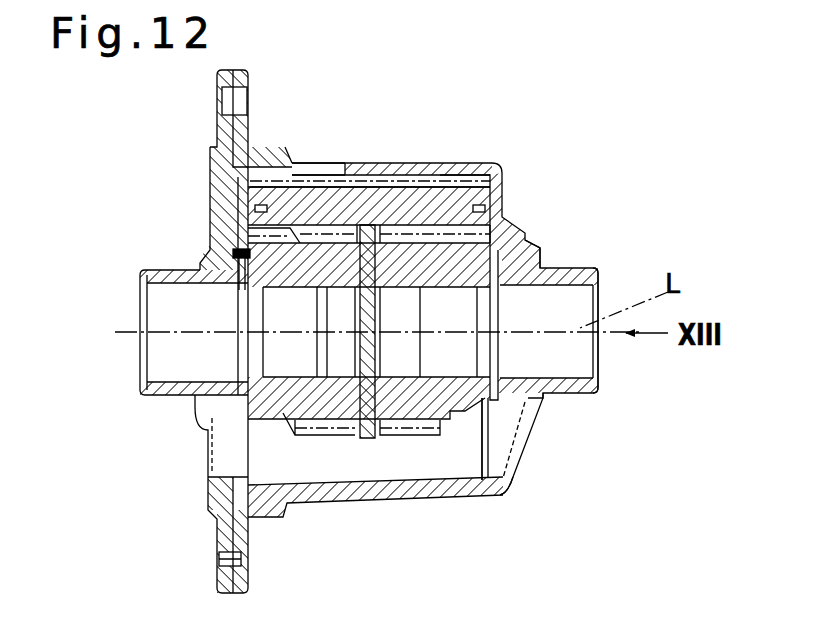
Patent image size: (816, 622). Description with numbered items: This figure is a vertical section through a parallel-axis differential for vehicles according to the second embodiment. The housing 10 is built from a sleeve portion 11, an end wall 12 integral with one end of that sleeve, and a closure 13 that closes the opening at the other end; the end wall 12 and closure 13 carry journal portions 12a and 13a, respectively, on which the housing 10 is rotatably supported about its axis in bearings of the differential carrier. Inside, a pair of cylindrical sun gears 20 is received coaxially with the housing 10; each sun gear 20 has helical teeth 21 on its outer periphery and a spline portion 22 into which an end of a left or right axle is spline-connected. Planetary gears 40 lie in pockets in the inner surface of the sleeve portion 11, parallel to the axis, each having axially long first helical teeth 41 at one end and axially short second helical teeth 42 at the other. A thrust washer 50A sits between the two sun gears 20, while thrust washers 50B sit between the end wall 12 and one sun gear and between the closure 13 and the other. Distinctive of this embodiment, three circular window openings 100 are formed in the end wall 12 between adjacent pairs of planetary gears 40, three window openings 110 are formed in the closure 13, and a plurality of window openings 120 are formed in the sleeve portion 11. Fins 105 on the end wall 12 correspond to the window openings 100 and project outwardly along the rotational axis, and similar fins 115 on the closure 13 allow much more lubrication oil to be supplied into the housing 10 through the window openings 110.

The housing 10 is at (485, 161).
The sleeve portion 11 is at (440, 162).
The end wall 12 is at (512, 212).
The journal portion 12a is at (574, 394).
The closure 13 is at (210, 168).
The journal portion 13a is at (192, 399).
The sun gear 20 is at (285, 278).
The helical teeth 21 is at (320, 438).
The spline portion 22 is at (287, 293).
The planetary gear 40 is at (503, 184).
The first helical teeth 41 is at (292, 162).
The second helical teeth 42 is at (478, 165).
The thrust washer 50A is at (362, 440).
The thrust washer 50B is at (212, 240).
The window opening 100 is at (497, 440).
The fin 105 is at (517, 470).
The window opening 110 is at (233, 457).
The fin 115 is at (205, 429).
The window opening 120 is at (356, 163).